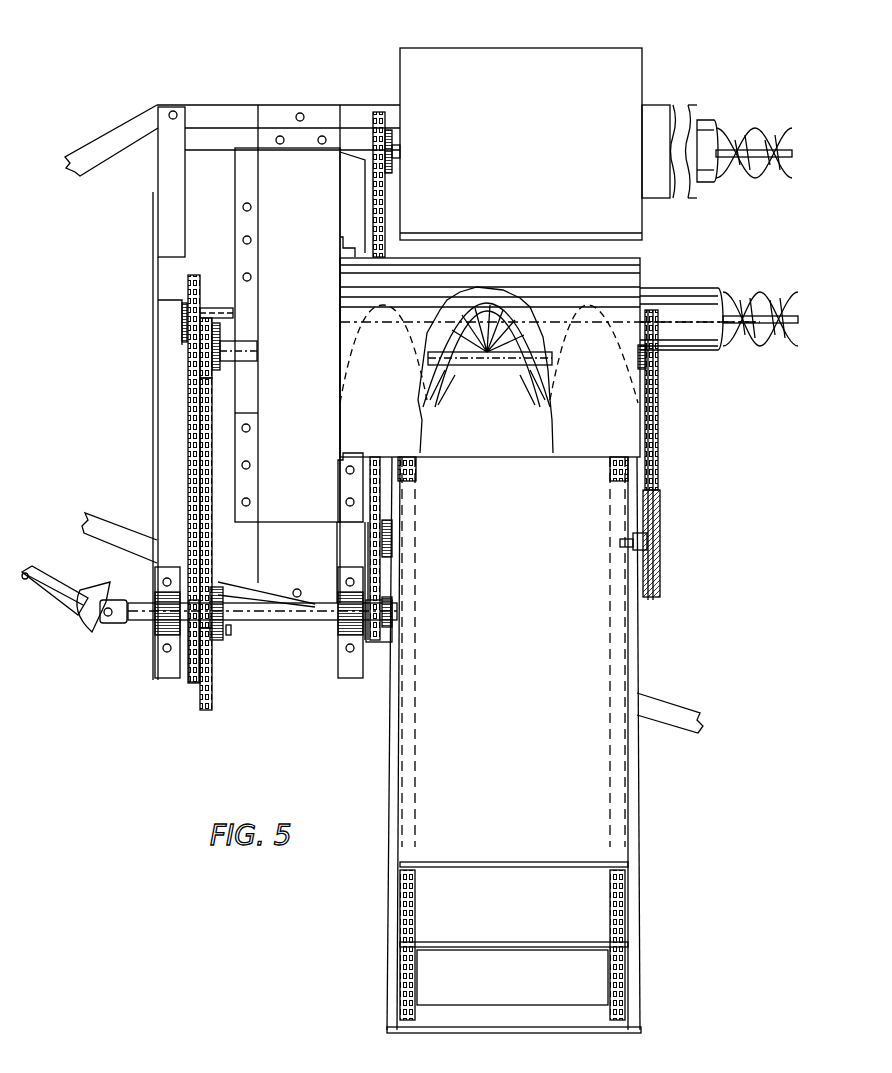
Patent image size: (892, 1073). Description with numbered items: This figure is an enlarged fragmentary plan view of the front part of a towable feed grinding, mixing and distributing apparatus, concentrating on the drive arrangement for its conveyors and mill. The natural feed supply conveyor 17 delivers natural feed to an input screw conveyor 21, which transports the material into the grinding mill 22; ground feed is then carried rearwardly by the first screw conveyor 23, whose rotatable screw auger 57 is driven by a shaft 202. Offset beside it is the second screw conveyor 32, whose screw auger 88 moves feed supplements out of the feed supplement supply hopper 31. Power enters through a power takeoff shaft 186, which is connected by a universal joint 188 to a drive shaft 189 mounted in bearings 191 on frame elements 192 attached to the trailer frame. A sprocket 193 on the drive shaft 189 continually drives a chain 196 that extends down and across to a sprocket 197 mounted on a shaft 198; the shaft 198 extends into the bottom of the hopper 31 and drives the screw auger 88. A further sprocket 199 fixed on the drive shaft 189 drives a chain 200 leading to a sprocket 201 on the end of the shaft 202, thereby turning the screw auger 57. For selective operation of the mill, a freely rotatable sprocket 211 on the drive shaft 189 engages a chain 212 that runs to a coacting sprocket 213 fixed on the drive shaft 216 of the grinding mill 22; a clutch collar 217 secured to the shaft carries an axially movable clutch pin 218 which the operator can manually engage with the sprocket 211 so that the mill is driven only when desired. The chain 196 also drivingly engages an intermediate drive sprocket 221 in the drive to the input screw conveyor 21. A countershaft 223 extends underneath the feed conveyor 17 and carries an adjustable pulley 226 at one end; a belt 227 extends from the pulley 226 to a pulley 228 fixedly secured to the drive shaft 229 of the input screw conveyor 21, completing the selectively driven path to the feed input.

The natural feed supply conveyor 17 is at (356, 937).
The screw conveyor 21 is at (445, 385).
The grinding mill 22 is at (291, 146).
The first screw conveyor 23 is at (752, 356).
The feed supplement supply hopper 31 is at (492, 47).
The second screw conveyor 32 is at (701, 113).
The screw auger 57 is at (765, 306).
The screw auger 88 is at (762, 146).
The power takeoff shaft 186 is at (52, 588).
The universal joint 188 is at (113, 626).
The drive shaft 189 is at (315, 618).
The bearings 191 is at (157, 655).
The frame elements 192 is at (345, 540).
The sprocket 193 is at (390, 652).
The chain 196 is at (380, 215).
The sprocket 197 is at (392, 170).
The shaft 198 is at (400, 152).
The sprocket 199 is at (186, 680).
The chain 200 is at (192, 420).
The sprocket 201 is at (185, 295).
The shaft 202 is at (213, 312).
The freely rotatable sprocket 211 is at (209, 702).
The chain 212 is at (206, 404).
The sprocket 213 is at (220, 340).
The drive shaft 216 is at (245, 361).
The clutch collar 217 is at (215, 588).
The clutch pin 218 is at (229, 636).
The intermediate drive sprocket 221 is at (389, 555).
The countershaft 223 is at (660, 533).
The adjustable pulley 226 is at (650, 553).
The belt 227 is at (652, 462).
The pulley 228 is at (656, 393).
The drive shaft 229 is at (648, 356).